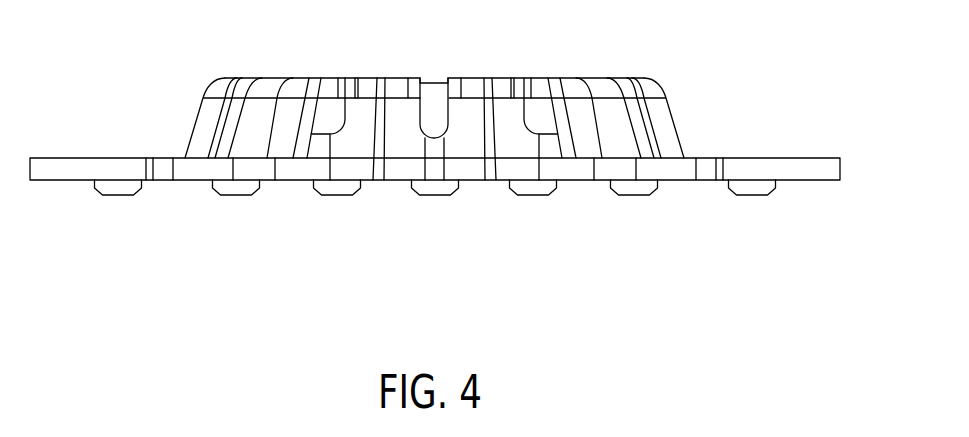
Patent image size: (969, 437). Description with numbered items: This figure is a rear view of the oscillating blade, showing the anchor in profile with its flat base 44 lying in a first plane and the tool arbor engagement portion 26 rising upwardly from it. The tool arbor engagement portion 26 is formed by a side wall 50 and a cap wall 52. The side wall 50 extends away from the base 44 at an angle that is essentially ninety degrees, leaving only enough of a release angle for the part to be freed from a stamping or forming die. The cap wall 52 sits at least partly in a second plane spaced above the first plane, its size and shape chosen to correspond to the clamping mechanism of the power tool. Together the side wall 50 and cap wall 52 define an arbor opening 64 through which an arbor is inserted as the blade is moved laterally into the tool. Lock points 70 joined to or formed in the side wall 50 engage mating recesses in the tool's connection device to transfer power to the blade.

The tool arbor engagement portion 26 is at (647, 68).
The base 44 is at (775, 157).
The side wall 50 is at (243, 147).
The cap wall 52 is at (257, 78).
The arbor opening 64 is at (355, 147).
The lock point 70 is at (208, 125).